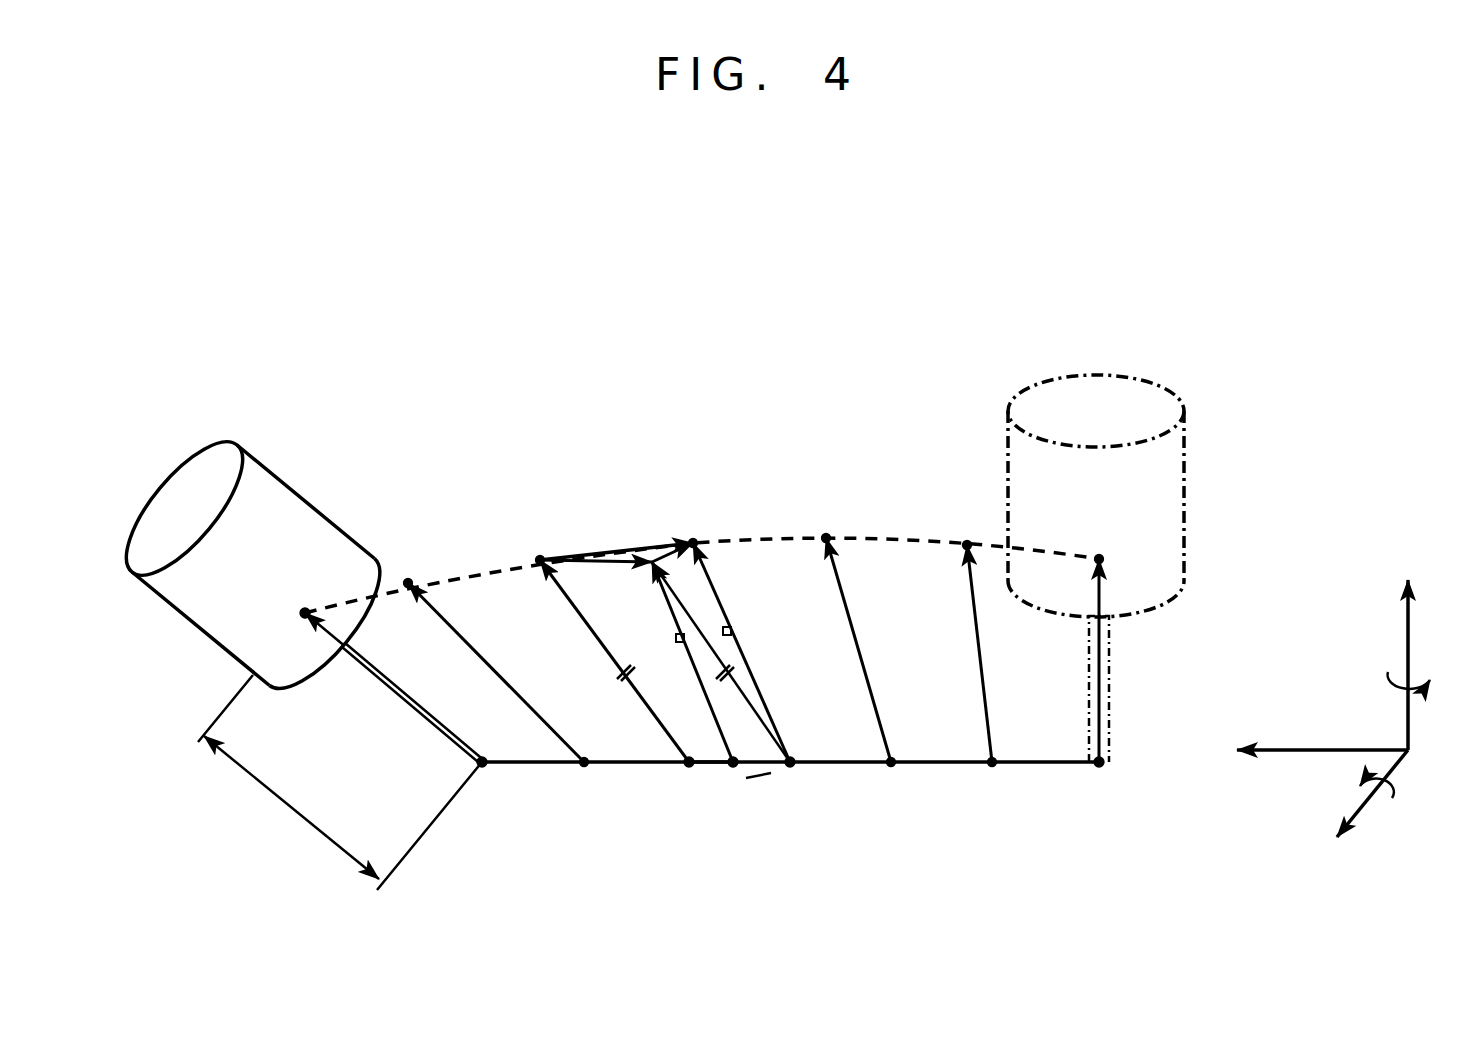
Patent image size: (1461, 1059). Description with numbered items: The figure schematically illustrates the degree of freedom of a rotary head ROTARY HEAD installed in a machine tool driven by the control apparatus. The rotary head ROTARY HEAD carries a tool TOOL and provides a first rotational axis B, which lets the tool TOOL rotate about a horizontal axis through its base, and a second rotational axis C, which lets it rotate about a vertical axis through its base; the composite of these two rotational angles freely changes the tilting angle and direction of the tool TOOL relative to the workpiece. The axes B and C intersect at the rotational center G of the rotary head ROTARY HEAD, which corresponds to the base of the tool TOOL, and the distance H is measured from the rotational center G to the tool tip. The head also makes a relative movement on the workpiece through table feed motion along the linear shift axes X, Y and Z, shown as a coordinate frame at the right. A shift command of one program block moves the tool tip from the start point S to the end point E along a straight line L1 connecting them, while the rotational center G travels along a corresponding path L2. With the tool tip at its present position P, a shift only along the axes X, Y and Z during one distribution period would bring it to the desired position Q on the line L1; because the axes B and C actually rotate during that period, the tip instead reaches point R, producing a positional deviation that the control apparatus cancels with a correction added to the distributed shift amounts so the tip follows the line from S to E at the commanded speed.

The rotary head ROTARY HEAD is at (300, 418).
The tool TOOL is at (440, 738).
The distance from rotational center to tool tip H is at (340, 782).
The rotational center of the rotary head G is at (284, 614).
The start point S is at (487, 782).
The present position of the tool tip P is at (617, 683).
The actual tool tip position after the period R is at (771, 773).
The desired shift position Q is at (729, 675).
The end point E is at (1096, 594).
The straight line connecting start and end points L1 is at (862, 765).
The path of the rotational center L2 is at (809, 539).
The linear shift axis X is at (1305, 754).
The linear shift axis Y is at (1356, 814).
The linear shift axis Z is at (1406, 648).
The first rotational axis B is at (1360, 794).
The second rotational axis C is at (1418, 702).